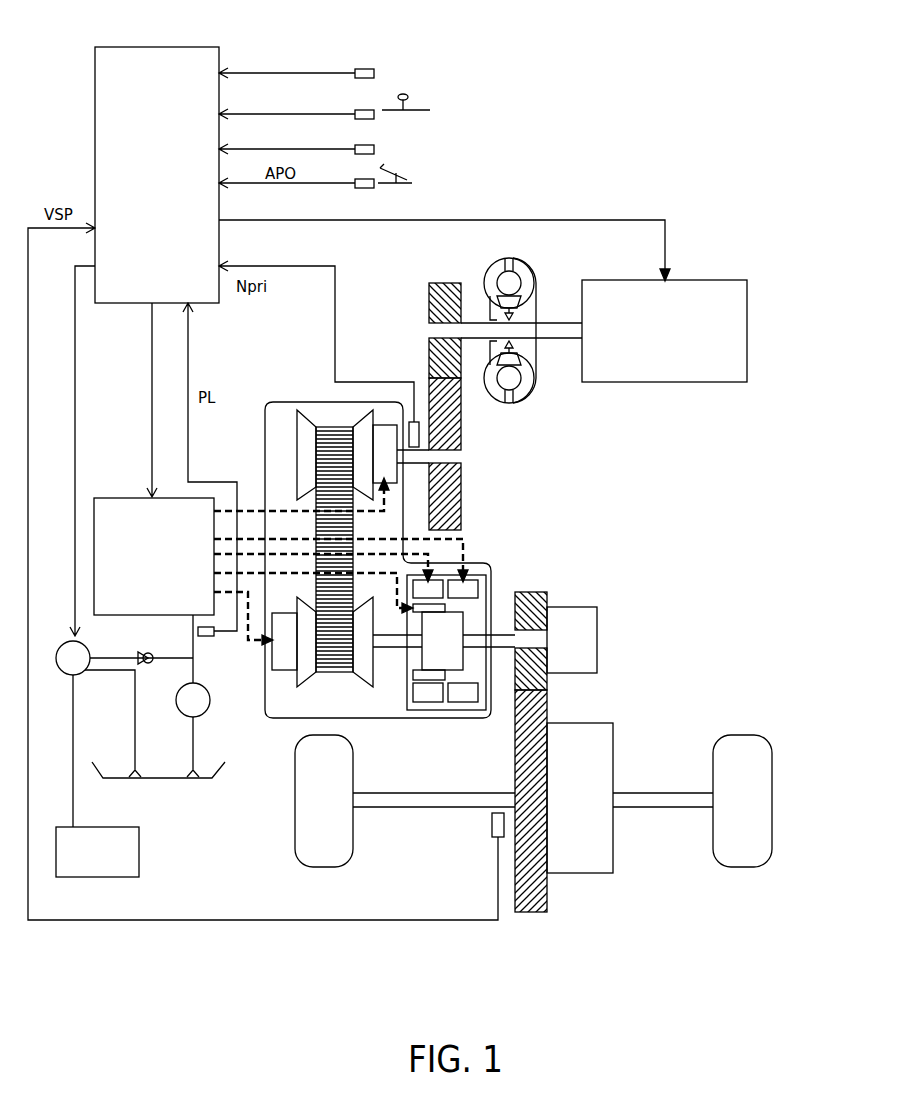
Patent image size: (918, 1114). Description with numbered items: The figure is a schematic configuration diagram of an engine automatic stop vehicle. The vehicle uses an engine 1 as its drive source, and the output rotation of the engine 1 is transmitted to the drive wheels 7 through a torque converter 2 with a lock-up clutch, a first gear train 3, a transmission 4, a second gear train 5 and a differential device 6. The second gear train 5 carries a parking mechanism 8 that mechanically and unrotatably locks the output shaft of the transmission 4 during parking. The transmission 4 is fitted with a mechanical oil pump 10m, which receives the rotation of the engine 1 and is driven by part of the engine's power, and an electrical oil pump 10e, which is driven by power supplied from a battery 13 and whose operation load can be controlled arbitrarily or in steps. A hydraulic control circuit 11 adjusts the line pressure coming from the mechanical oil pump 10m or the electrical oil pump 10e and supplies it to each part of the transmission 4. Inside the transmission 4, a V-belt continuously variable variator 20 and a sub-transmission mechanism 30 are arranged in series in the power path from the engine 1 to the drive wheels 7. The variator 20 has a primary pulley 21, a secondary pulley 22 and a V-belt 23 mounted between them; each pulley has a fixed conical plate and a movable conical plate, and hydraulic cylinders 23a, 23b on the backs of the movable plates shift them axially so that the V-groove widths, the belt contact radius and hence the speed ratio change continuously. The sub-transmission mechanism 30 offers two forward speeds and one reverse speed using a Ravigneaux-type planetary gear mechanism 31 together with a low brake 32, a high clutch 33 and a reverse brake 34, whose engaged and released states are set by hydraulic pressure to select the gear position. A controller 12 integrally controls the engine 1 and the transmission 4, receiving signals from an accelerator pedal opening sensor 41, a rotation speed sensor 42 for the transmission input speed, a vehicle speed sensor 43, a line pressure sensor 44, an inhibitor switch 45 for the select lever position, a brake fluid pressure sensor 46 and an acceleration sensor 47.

The engine 1 is at (735, 292).
The torque converter 2 is at (536, 285).
The first gear train 3 is at (451, 269).
The transmission 4 is at (305, 402).
The second gear train 5 is at (535, 924).
The differential device 6 is at (580, 864).
The drive wheels 7 is at (325, 855).
The parking mechanism 8 is at (585, 632).
The electrical oil pump 10e is at (78, 676).
The mechanical oil pump 10m is at (208, 708).
The hydraulic control circuit 11 is at (110, 500).
The controller 12 is at (208, 56).
The battery 13 is at (133, 864).
The variator 20 is at (283, 401).
The primary pulley 21 is at (307, 456).
The secondary pulley 22 is at (302, 684).
The V-belt 23 is at (335, 426).
The hydraulic cylinder 23a is at (383, 437).
The hydraulic cylinder 23b is at (281, 662).
The sub-transmission mechanism 30 is at (468, 602).
The Ravigneaux-type planetary gear mechanism 31 is at (447, 635).
The low brake 32 is at (430, 590).
The high clutch 33 is at (428, 676).
The reverse brake 34 is at (463, 590).
The accelerator pedal opening sensor 41 is at (364, 188).
The rotation speed sensor 42 is at (414, 430).
The vehicle speed sensor 43 is at (492, 826).
The line pressure sensor 44 is at (211, 637).
The inhibitor switch 45 is at (366, 111).
The brake fluid pressure sensor 46 is at (358, 153).
The acceleration sensor 47 is at (364, 70).